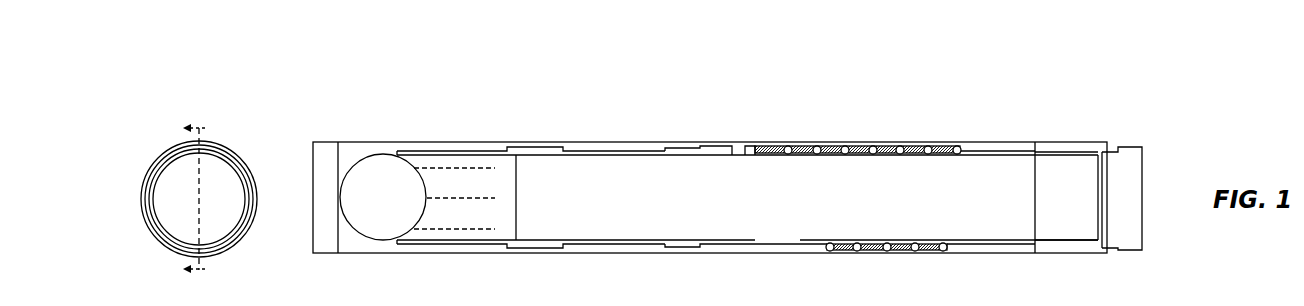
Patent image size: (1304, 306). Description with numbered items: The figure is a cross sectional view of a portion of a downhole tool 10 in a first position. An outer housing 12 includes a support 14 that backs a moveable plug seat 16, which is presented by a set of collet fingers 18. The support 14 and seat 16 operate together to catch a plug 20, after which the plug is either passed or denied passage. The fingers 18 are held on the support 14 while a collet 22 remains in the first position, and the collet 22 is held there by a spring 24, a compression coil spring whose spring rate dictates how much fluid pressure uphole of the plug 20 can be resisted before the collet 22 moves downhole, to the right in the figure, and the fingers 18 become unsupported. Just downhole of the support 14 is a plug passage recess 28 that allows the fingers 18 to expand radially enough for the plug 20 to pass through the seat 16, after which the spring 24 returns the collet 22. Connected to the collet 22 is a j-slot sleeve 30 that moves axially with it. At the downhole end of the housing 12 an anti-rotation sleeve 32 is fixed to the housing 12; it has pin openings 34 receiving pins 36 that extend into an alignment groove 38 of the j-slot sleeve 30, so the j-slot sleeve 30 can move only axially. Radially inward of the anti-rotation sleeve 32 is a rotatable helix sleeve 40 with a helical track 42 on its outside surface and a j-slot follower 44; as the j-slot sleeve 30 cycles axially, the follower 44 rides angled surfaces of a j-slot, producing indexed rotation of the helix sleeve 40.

The tool 10 is at (257, 80).
The outer housing 12 is at (376, 158).
The support 14 is at (387, 152).
The moveable plug seat 16 is at (407, 160).
The collet fingers 18 is at (453, 180).
The plug 20 is at (368, 167).
The collet 22 is at (533, 142).
The spring 24 is at (602, 145).
The plug passage recess 28 is at (490, 156).
The j-slot sleeve 30 is at (578, 218).
The anti-rotation sleeve 32 is at (715, 140).
The pin openings 34 is at (755, 153).
The pins 36 is at (740, 147).
The alignment groove 38 is at (675, 153).
The helix sleeve 40 is at (808, 153).
The helical track 42 is at (845, 147).
The j-slot follower 44 is at (788, 147).